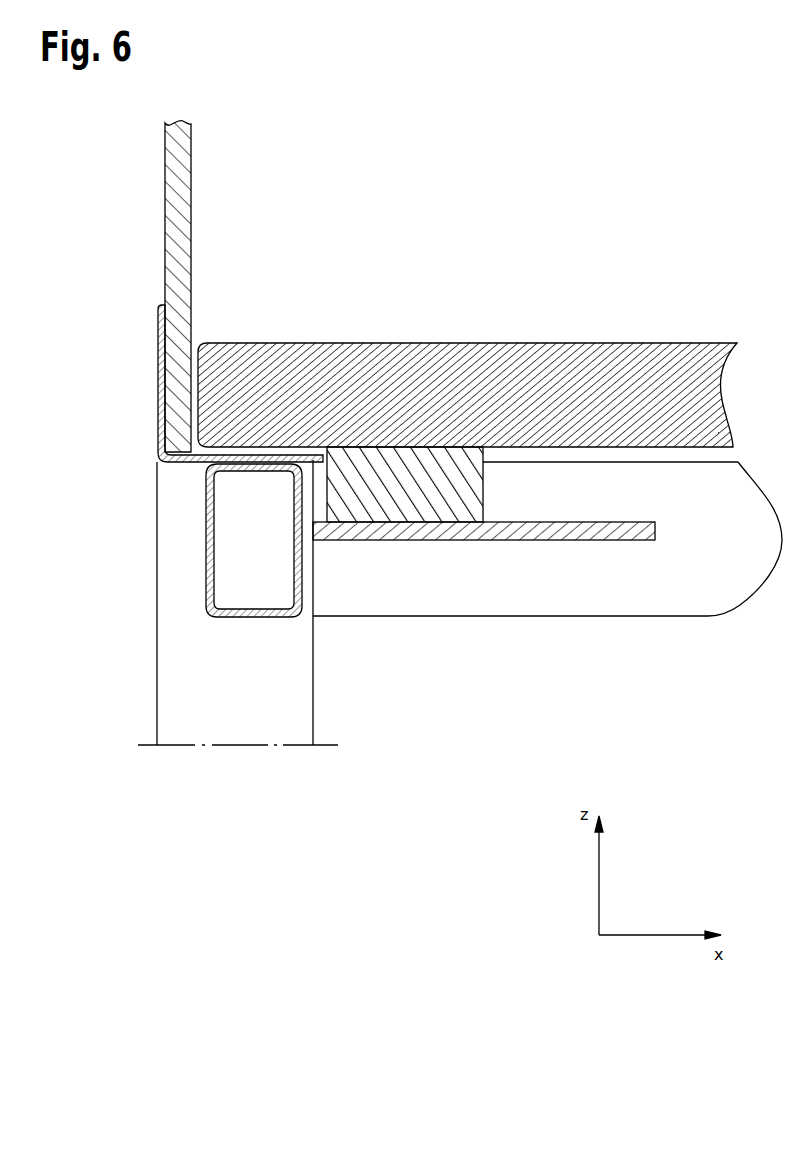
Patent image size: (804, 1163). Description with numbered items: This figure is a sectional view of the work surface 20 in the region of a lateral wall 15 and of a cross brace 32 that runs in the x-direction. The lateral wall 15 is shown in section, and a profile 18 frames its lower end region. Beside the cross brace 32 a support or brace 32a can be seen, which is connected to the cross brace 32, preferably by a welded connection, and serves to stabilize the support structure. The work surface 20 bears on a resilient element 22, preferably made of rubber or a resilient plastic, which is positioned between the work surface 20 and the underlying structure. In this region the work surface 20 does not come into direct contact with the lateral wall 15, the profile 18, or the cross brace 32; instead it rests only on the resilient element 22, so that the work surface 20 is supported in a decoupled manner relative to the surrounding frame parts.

The lateral wall 15 is at (178, 222).
The profile 18 is at (157, 397).
The work surface 20 is at (500, 385).
The resilient element 22 is at (440, 502).
The cross brace 32 is at (238, 583).
The brace 32a is at (580, 530).